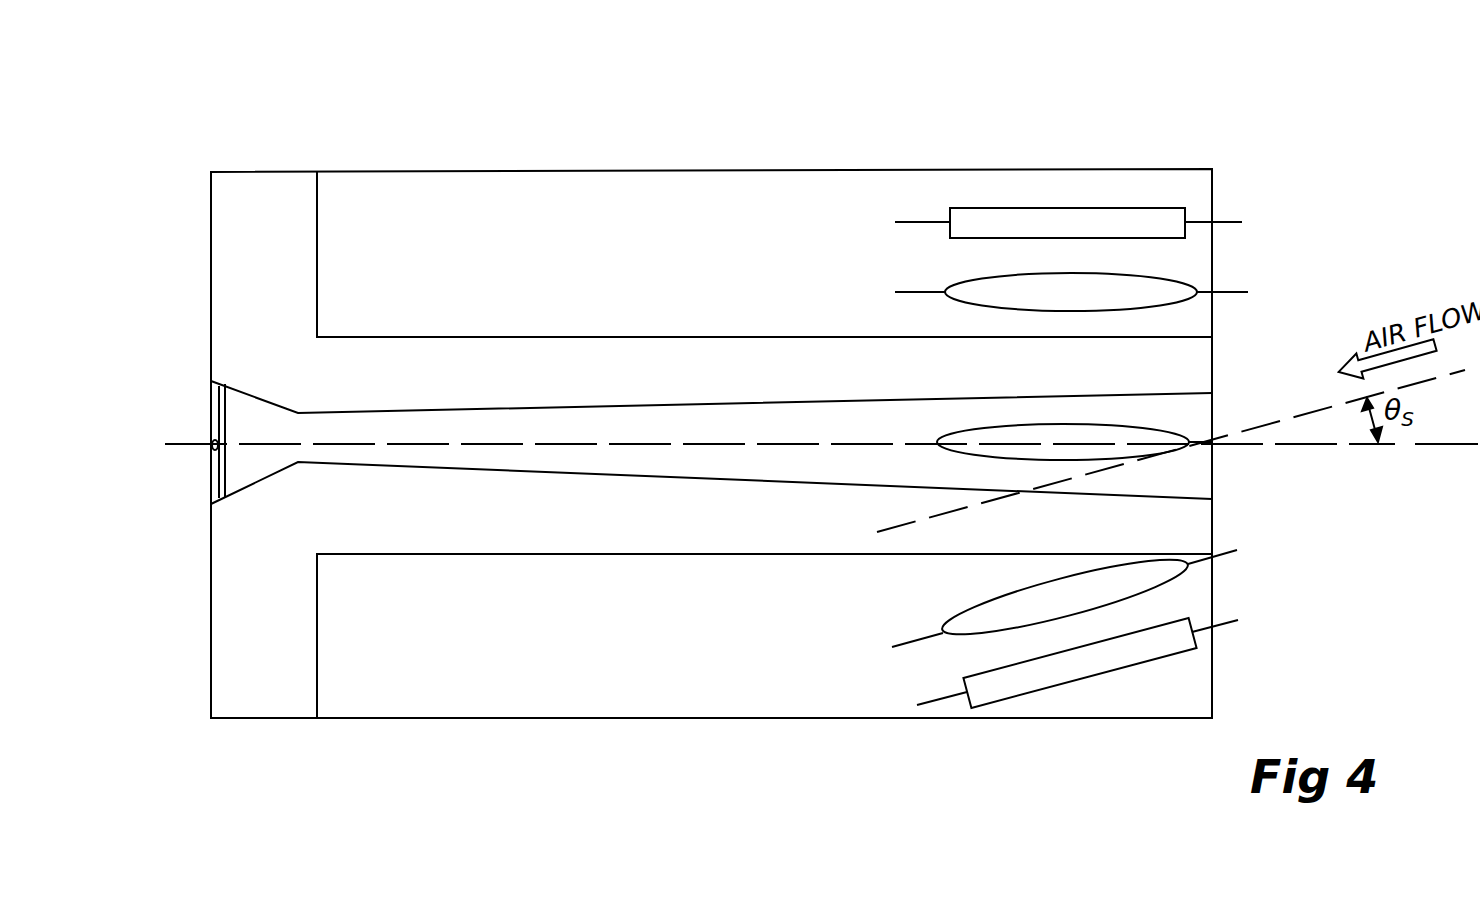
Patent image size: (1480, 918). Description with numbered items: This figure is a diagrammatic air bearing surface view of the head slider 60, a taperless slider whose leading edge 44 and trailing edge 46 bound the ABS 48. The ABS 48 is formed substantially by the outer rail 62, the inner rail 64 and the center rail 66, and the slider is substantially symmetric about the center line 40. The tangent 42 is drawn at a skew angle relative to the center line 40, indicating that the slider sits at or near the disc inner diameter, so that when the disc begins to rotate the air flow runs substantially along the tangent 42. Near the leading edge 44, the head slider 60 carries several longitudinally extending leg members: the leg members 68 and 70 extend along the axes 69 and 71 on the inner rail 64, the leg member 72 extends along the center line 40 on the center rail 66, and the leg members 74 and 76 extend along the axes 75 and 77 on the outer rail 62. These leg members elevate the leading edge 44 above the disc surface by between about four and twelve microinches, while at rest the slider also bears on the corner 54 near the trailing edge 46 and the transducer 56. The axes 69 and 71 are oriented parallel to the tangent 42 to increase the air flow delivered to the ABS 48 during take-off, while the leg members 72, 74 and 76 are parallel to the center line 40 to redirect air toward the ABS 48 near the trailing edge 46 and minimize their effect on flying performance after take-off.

The center line 40 is at (1435, 446).
The tangent 42 is at (1432, 388).
The leading edge 44 is at (1212, 685).
The trailing edge 46 is at (211, 262).
The ABS 48 is at (550, 662).
The corner 54 is at (317, 222).
The transducer 56 is at (213, 445).
The head slider 60 is at (1158, 122).
The outer rail 62 is at (593, 197).
The inner rail 64 is at (695, 695).
The center rail 66 is at (705, 462).
The leg member 68 is at (1106, 672).
The axis 69 is at (1240, 626).
The leg member 70 is at (1190, 576).
The axis 71 is at (1225, 553).
The leg member 72 is at (1180, 450).
The leg member 74 is at (1200, 302).
The axis 75 is at (1240, 290).
The leg member 76 is at (1190, 232).
The axis 77 is at (1228, 218).